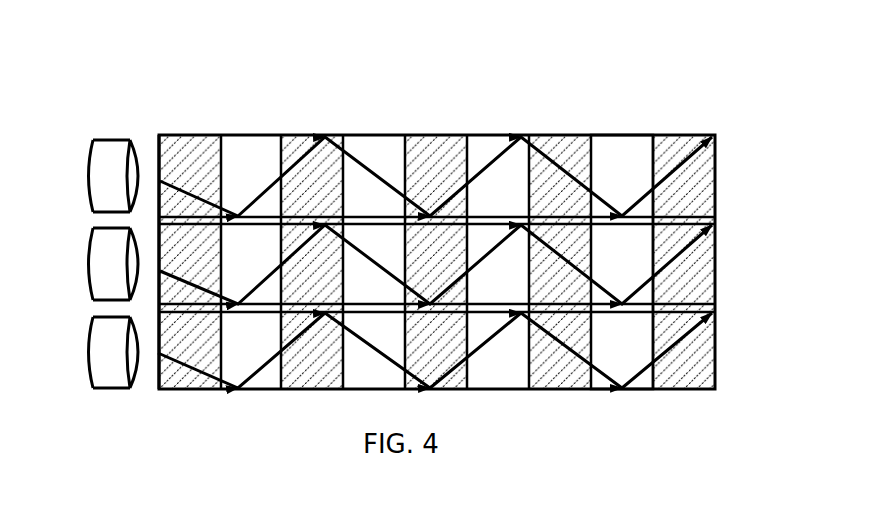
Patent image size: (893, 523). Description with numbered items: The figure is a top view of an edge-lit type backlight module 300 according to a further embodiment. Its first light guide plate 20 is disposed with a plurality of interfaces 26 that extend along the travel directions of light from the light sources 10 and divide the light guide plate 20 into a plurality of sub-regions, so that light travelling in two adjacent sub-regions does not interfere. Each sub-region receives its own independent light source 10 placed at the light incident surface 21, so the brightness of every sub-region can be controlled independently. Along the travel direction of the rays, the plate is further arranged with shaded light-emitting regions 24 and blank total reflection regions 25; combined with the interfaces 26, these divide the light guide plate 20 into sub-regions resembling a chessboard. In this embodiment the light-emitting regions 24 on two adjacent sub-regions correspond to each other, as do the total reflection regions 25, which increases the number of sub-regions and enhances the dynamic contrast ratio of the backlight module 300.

The edge-lit type backlight module 300 is at (399, 202).
The light source 10 is at (70, 170).
The first light guide plate 20 is at (392, 100).
The light incident surface 21 is at (150, 152).
The light-emitting region 24 is at (292, 135).
The total reflection region 25 is at (617, 137).
The interface 26 is at (705, 220).